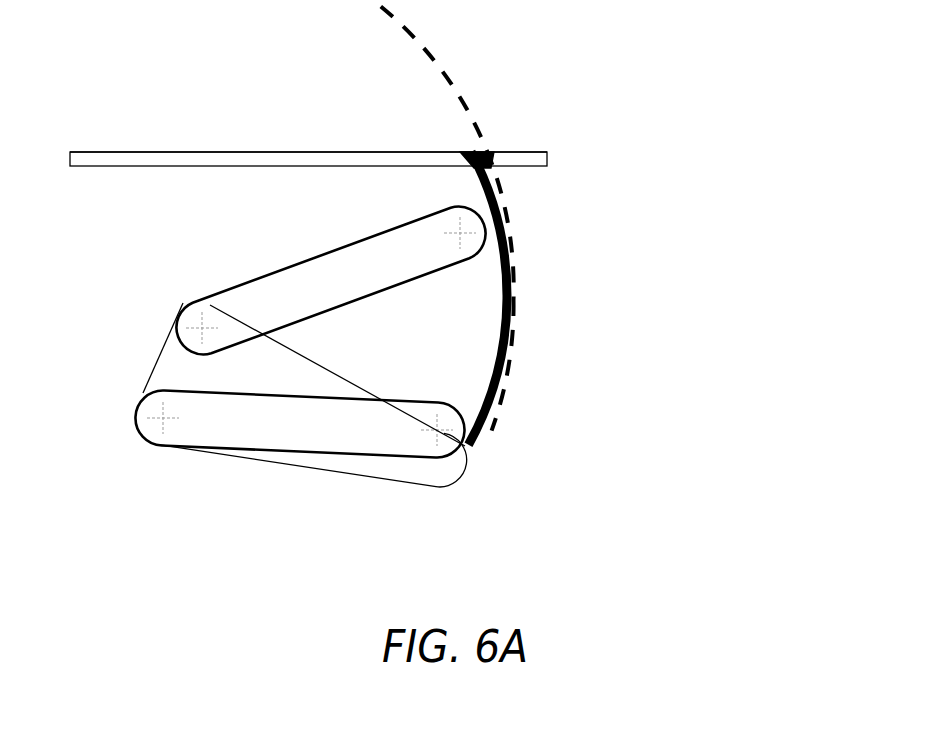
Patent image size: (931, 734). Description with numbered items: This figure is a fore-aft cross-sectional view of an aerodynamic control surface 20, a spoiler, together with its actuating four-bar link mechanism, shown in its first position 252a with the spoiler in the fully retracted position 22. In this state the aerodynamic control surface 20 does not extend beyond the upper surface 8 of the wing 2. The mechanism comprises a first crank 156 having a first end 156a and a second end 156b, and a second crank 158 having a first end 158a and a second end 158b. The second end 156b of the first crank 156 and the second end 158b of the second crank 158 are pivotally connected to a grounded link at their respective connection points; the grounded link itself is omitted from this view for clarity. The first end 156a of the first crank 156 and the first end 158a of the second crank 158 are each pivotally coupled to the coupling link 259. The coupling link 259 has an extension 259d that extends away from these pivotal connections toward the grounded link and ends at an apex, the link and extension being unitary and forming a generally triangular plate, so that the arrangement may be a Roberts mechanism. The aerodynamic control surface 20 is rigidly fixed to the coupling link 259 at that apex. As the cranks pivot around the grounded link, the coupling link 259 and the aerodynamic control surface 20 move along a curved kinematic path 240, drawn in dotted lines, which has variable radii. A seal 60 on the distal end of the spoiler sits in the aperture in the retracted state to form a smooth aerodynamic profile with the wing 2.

The wing 2 is at (260, 158).
The upper surface 8 is at (167, 153).
The aerodynamic control surface 20 is at (513, 340).
The fully retracted position 22 is at (523, 262).
The seal 60 is at (478, 163).
The first crank 156 is at (298, 433).
The first end of the first crank 156a is at (155, 428).
The second end of the first crank 156b is at (442, 420).
The second crank 158 is at (320, 268).
The first end of the second crank 158a is at (188, 322).
The second end of the second crank 158b is at (453, 223).
The curved kinematic path 240 is at (450, 70).
The first position 252a is at (198, 508).
The coupling link 259 is at (155, 373).
The extension 259d is at (373, 463).